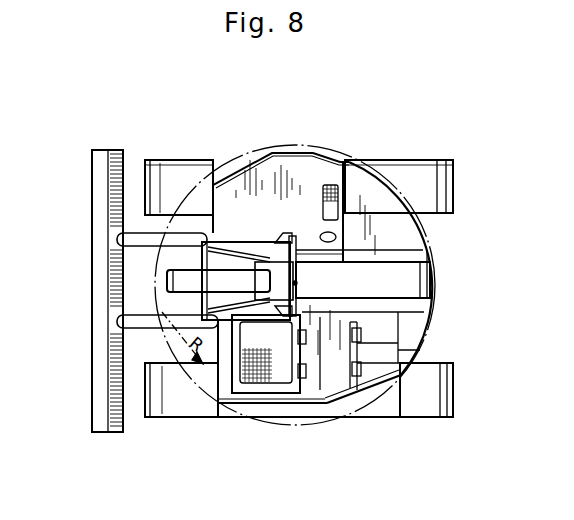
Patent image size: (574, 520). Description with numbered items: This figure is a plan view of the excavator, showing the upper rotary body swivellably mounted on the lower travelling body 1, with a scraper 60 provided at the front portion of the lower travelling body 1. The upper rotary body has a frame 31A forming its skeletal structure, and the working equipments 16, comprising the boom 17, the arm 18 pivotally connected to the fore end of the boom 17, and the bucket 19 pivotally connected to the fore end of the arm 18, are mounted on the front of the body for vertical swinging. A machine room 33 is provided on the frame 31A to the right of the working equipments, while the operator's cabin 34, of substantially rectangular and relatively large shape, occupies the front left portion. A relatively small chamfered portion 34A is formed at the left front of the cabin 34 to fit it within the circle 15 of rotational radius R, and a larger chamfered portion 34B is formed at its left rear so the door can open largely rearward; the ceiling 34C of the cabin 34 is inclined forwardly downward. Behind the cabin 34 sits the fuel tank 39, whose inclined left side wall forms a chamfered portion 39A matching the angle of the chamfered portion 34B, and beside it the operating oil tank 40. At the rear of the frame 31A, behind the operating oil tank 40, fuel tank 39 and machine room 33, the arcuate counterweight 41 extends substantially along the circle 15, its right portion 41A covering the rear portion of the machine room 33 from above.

The lower travelling body 1 is at (454, 182).
The circle of rotational radius R 15 is at (200, 392).
The working equipments 16 is at (410, 258).
The boom 17 is at (420, 275).
The arm 18 is at (190, 278).
The bucket 19 is at (270, 245).
The frame 31A is at (395, 385).
The machine room 33 is at (258, 175).
The operator's cabin 34 is at (313, 397).
The chamfered portion 34A is at (238, 385).
The chamfered portion 34B is at (352, 395).
The ceiling 34C is at (279, 396).
The fuel tank 39 is at (378, 356).
The chamfered portion 39A is at (392, 368).
The operating oil tank 40 is at (390, 328).
The counterweight 41 is at (417, 316).
The right portion of counterweight 41A is at (370, 195).
The scraper 60 is at (100, 362).